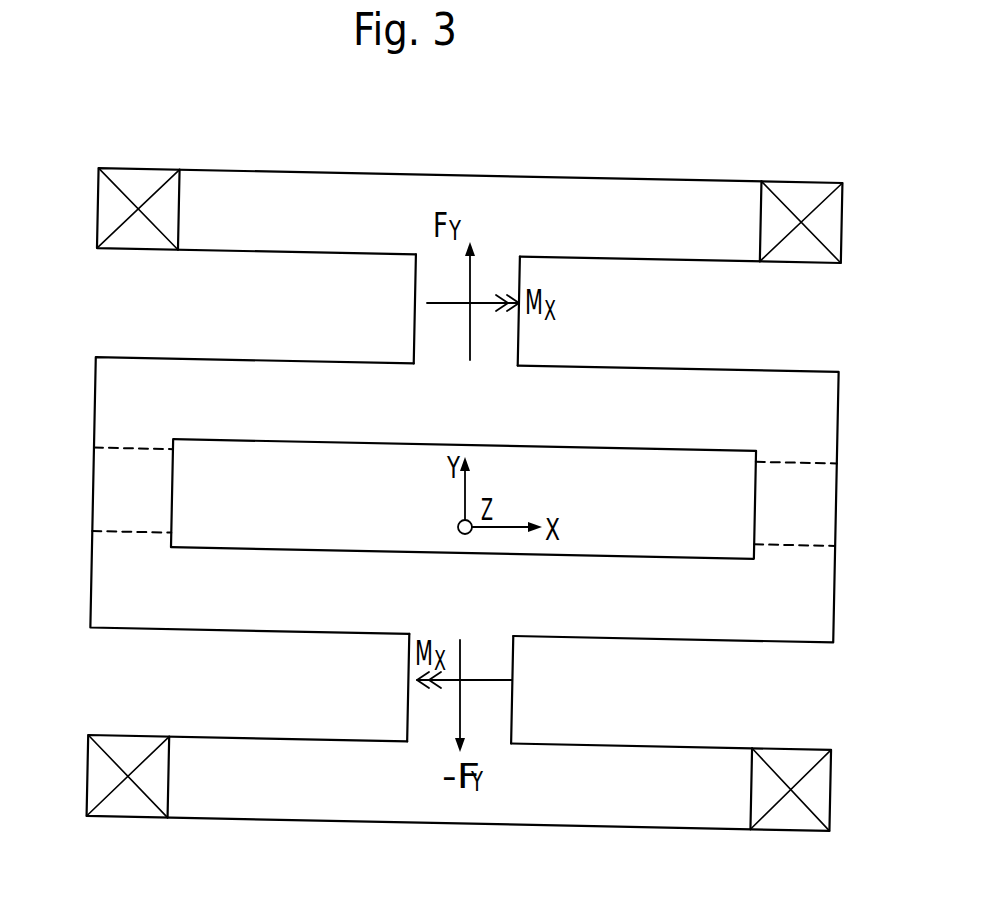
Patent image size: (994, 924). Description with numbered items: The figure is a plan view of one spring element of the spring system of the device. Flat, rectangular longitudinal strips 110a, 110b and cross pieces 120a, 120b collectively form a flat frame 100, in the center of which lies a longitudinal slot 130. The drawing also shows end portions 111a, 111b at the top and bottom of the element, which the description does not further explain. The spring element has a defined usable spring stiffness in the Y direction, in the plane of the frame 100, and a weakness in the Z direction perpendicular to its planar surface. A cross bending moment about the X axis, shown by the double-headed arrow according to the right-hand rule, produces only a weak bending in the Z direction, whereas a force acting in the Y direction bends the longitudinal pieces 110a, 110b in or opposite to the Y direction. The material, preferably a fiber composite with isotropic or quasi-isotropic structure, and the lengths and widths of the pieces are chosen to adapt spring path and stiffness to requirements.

The flat frame 100 is at (98, 347).
The upper fixed bar / anchor beam 111a is at (647, 198).
The lower fixed bar / anchor beam 111b is at (625, 800).
The longitudinal strip 110a is at (667, 395).
The longitudinal strip 110b is at (643, 612).
The longitudinal slot 130 is at (295, 515).
The cross piece 120a is at (110, 485).
The cross piece 120b is at (818, 500).